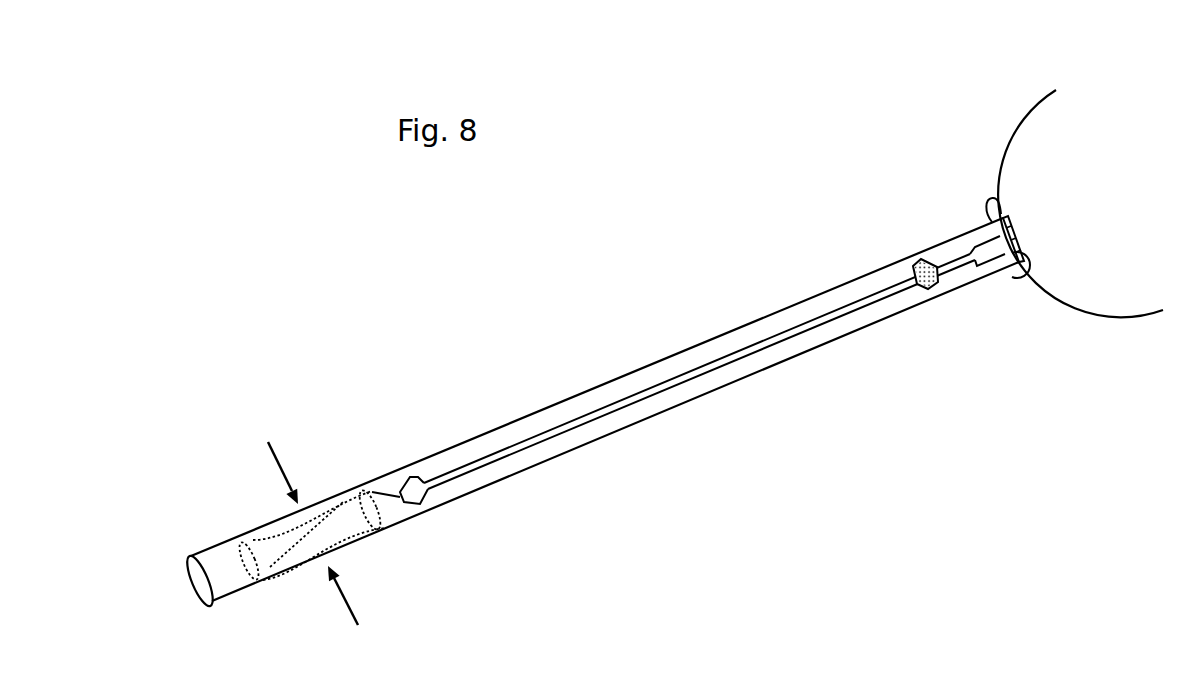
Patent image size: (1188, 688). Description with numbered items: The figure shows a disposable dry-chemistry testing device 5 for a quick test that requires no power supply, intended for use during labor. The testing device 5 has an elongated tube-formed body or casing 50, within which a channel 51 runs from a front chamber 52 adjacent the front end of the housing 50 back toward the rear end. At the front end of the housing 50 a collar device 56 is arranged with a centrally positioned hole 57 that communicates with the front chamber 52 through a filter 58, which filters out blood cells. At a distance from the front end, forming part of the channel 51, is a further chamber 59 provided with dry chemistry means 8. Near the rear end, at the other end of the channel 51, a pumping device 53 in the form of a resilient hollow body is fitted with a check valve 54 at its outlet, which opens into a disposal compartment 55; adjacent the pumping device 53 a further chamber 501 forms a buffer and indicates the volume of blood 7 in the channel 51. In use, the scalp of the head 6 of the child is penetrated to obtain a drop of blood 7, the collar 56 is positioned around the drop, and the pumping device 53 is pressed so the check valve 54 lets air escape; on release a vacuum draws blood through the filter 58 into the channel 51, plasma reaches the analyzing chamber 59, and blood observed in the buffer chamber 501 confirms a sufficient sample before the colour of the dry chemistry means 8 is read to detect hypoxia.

The testing device 5 is at (679, 430).
The head 6 is at (1142, 320).
The blood 7 is at (1023, 240).
The dry chemistry means 8 is at (915, 266).
The body/casing 50 is at (536, 462).
The channel 51 is at (800, 326).
The front chamber 52 is at (988, 259).
The pumping device 53 is at (344, 517).
The check valve 54 is at (250, 580).
The disposal compartment 55 is at (226, 565).
The collar device 56 is at (988, 212).
The hole 57 is at (1013, 244).
The filter 58 is at (1009, 268).
The further chamber 59 is at (923, 290).
The further chamber 501 is at (417, 478).